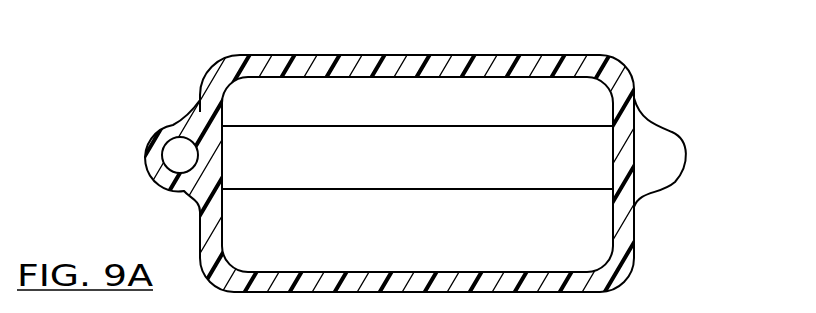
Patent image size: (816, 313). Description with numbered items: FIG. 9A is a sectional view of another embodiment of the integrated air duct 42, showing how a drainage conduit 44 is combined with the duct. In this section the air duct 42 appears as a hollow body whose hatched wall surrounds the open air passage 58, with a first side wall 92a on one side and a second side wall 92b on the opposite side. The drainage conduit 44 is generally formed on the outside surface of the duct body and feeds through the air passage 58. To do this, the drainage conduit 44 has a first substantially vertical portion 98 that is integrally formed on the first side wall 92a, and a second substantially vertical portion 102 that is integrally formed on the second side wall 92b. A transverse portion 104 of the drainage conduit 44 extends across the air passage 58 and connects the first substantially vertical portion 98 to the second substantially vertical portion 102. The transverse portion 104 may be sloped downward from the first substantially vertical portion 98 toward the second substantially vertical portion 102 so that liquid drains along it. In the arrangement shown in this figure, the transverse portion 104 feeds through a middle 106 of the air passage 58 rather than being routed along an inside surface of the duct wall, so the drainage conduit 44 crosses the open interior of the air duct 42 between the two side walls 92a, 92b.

The integrated air duct 42 is at (548, 56).
The drainage conduit 44 is at (176, 194).
The air passage 58 is at (426, 242).
The first side wall 92a is at (200, 94).
The second side wall 92b is at (634, 94).
The first substantially vertical portion 98 is at (148, 157).
The second substantially vertical portion 102 is at (686, 158).
The transverse portion 104 is at (462, 126).
The middle 106 is at (578, 192).